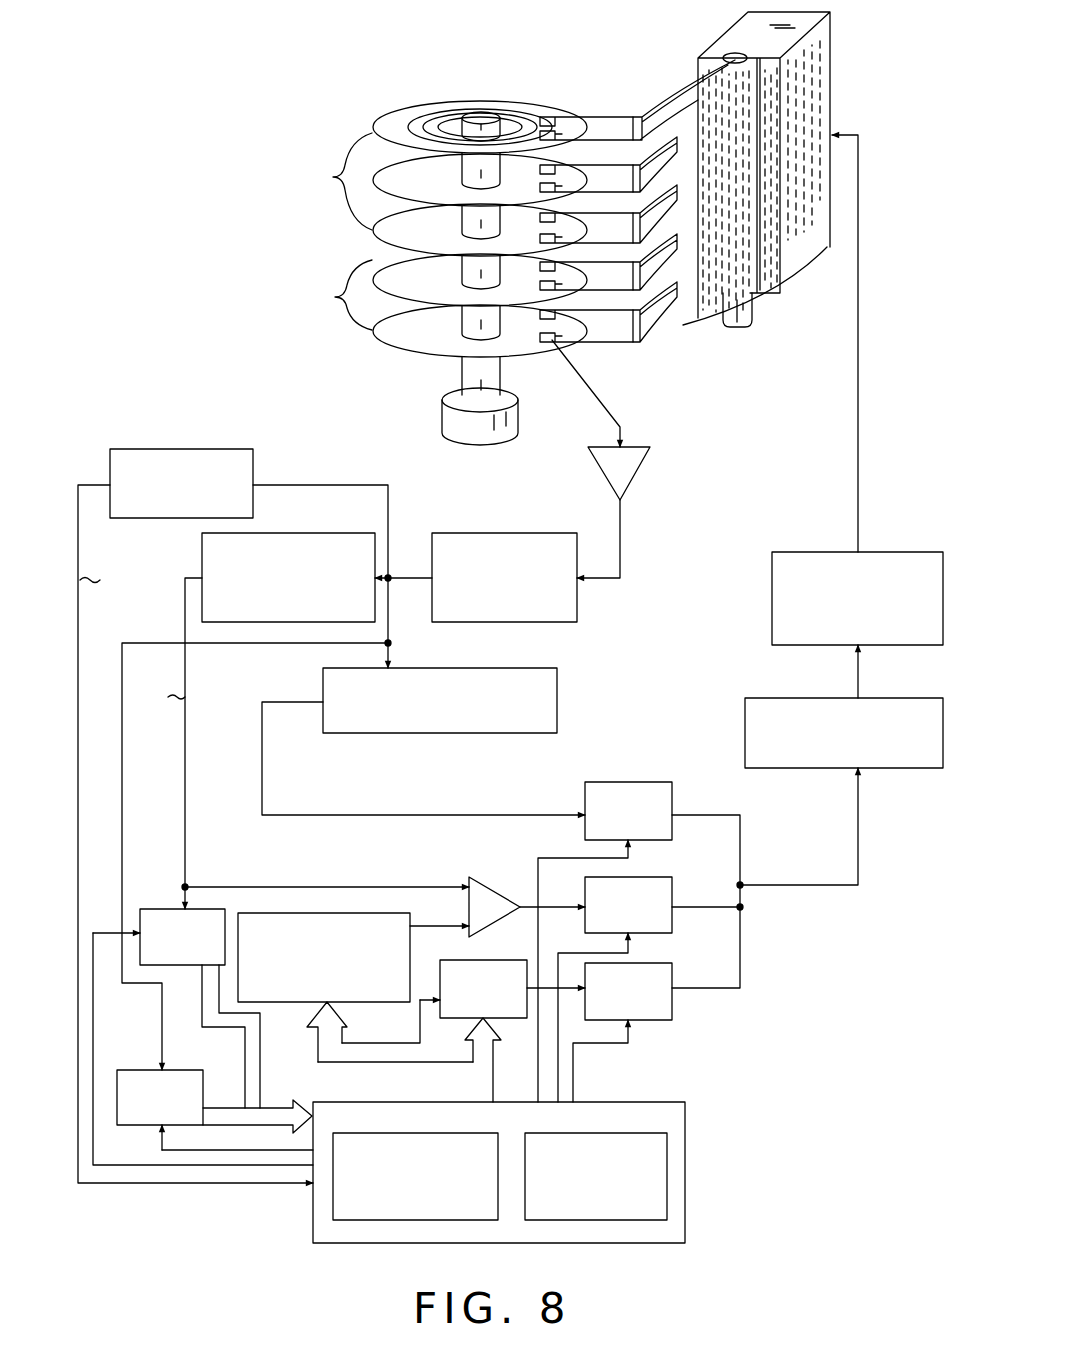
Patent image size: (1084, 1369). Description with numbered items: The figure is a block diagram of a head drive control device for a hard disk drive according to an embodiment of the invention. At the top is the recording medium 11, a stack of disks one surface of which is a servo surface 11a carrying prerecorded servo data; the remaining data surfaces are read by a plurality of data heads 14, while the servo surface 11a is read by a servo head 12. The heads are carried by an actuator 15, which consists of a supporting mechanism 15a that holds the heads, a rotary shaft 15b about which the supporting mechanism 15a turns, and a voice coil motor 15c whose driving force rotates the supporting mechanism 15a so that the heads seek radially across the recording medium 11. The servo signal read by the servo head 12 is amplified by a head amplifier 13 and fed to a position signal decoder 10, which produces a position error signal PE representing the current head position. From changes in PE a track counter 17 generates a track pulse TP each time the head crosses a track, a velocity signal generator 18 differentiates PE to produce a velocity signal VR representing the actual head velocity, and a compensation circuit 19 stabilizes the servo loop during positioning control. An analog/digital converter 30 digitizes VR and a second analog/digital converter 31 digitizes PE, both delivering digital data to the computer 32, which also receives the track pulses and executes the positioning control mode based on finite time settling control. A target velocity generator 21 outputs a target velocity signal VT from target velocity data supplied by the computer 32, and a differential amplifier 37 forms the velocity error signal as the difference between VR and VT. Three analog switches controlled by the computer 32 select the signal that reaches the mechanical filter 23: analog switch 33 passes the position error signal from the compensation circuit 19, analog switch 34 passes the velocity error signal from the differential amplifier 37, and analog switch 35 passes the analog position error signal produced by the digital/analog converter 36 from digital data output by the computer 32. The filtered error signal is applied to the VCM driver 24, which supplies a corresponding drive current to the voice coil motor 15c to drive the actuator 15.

The position signal decoder 10 is at (513, 532).
The recording medium 11 is at (447, 273).
The servo surface 11a is at (410, 343).
The servo head 12 is at (545, 345).
The head amplifier 13 is at (648, 470).
The data heads 14 is at (547, 117).
The actuator 15 is at (763, 197).
The supporting mechanism 15a is at (678, 323).
The rotary shaft 15b is at (750, 308).
The voice coil motor 15c is at (830, 68).
The track counter 17 is at (165, 449).
The velocity signal generator 18 is at (315, 533).
The compensation circuit 19 is at (410, 735).
The target velocity generator 21 is at (385, 1002).
The mechanical filter 23 is at (893, 768).
The VCM driver 24 is at (772, 597).
The analog/digital converter 30 is at (158, 906).
The analog/digital converter 31 is at (118, 1069).
The computer (CPU) 32 is at (685, 1177).
The analog switch 33 is at (672, 795).
The analog switch 34 is at (672, 890).
The analog switch 35 is at (672, 975).
The digital/analog converter 36 is at (508, 1020).
The differential amplifier 37 is at (490, 877).